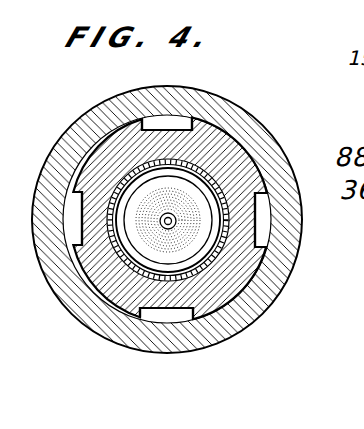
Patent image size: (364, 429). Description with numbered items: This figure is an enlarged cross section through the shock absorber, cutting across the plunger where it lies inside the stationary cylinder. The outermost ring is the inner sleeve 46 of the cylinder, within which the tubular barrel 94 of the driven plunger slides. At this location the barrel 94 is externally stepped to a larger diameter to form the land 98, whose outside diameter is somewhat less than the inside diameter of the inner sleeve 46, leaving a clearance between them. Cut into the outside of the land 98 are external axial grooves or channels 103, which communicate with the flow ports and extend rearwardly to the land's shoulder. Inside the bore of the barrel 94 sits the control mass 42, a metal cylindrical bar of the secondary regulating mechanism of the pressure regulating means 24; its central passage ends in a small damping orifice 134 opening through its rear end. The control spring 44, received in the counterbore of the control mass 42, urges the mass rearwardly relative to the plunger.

The automatic load responsive pressure regulating means 24 is at (189, 157).
The control mass 42 is at (212, 240).
The control spring 44 is at (190, 244).
The inner sleeve 46 is at (231, 324).
The tubular rod or barrel 94 is at (115, 304).
The land 98 is at (116, 130).
The external axial grooves or channels 103 is at (168, 130).
The damping orifice 134 is at (169, 228).